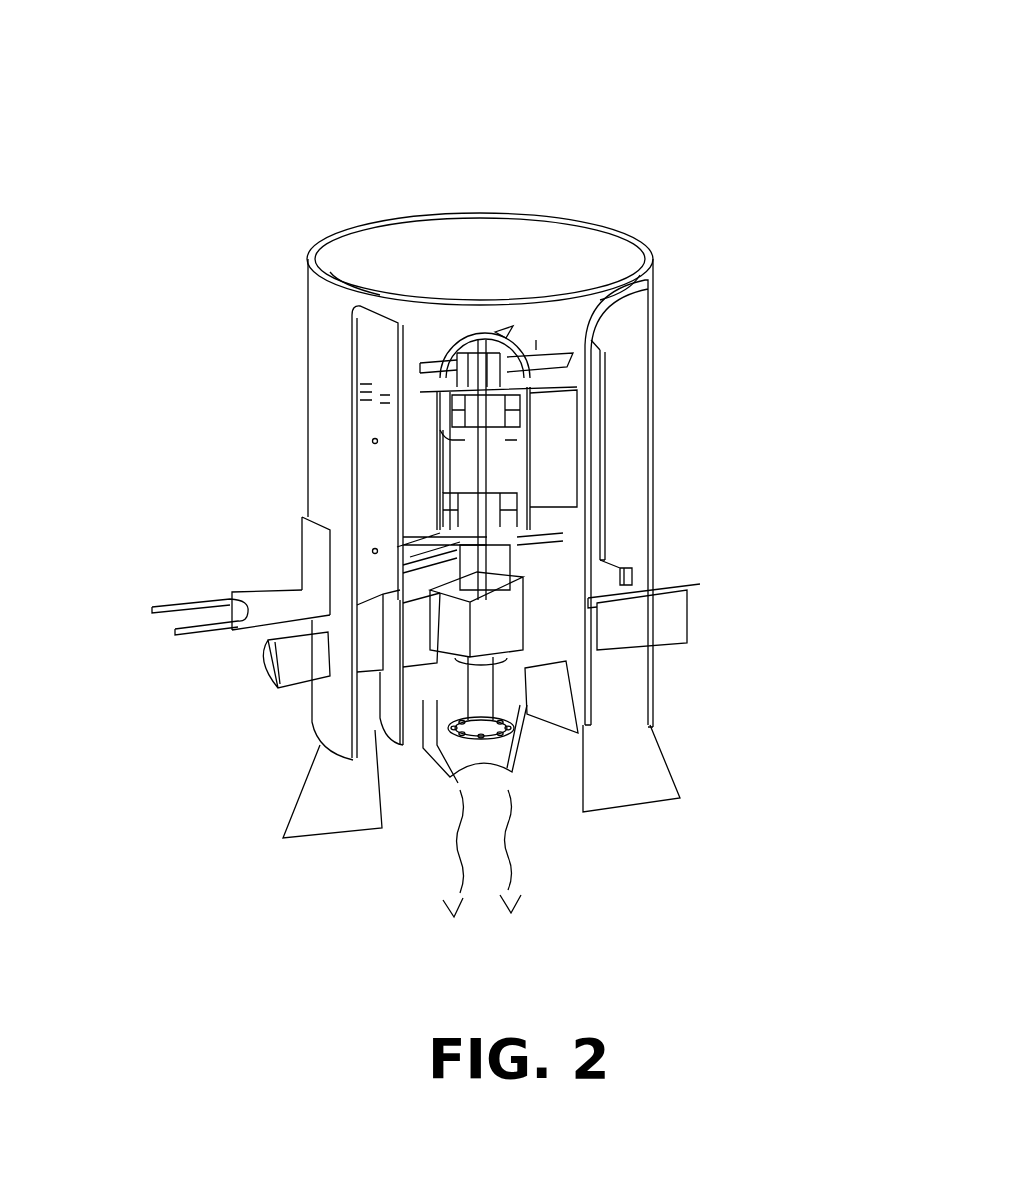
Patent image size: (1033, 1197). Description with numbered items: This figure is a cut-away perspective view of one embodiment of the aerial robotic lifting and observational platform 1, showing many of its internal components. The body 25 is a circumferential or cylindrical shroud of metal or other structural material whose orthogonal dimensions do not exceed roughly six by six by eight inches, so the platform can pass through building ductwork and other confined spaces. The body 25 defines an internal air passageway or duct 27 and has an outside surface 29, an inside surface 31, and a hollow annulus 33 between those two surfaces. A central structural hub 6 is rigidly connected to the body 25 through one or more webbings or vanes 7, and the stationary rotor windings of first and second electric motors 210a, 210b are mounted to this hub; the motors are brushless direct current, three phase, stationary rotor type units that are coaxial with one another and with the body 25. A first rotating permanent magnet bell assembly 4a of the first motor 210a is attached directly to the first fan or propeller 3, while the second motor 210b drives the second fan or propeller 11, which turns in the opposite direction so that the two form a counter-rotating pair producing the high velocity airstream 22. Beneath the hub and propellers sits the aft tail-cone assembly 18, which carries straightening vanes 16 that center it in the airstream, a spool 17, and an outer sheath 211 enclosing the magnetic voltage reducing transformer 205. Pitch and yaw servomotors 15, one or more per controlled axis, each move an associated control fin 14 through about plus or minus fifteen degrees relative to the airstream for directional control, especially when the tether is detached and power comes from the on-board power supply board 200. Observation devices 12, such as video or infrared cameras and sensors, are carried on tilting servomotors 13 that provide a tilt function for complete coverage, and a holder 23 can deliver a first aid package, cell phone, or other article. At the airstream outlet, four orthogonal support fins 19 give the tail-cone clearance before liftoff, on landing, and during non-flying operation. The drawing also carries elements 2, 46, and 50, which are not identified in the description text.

The aerial robotic lifting and observational platform 1 is at (650, 303).
The top plate 2 is at (492, 335).
The first fan or propeller 3 is at (540, 353).
The first rotating permanent magnet bell assembly 4a is at (515, 401).
The central structural hub 6 is at (512, 452).
The webbings or vanes 7 is at (552, 472).
The second fan or propeller 11 is at (565, 560).
The observation devices 12 is at (258, 660).
The tilting servomotors 13 is at (345, 625).
The control fin 14 is at (557, 688).
The pitch and yaw servomotors 15 is at (350, 705).
The straightening vanes 16 is at (397, 612).
The spool 17 is at (482, 708).
The aft tail-cone assembly 18 is at (515, 780).
The support fins 19 is at (325, 808).
The high velocity airstream 22 is at (482, 864).
The holder 23 is at (180, 604).
The body 25 is at (345, 357).
The internal air passageway or duct 27 is at (433, 320).
The outside surface 29 is at (655, 338).
The inside surface 31 is at (478, 295).
The hollow annulus 33 is at (557, 323).
The lower bracket 46 is at (425, 515).
The fastener 50 is at (361, 441).
The on-board power supply board 200 is at (603, 373).
The magnetic voltage reducing transformer 205 is at (552, 640).
The first electric motor 210a is at (545, 408).
The second electric motor 210b is at (505, 511).
The outer sheath 211 is at (500, 620).